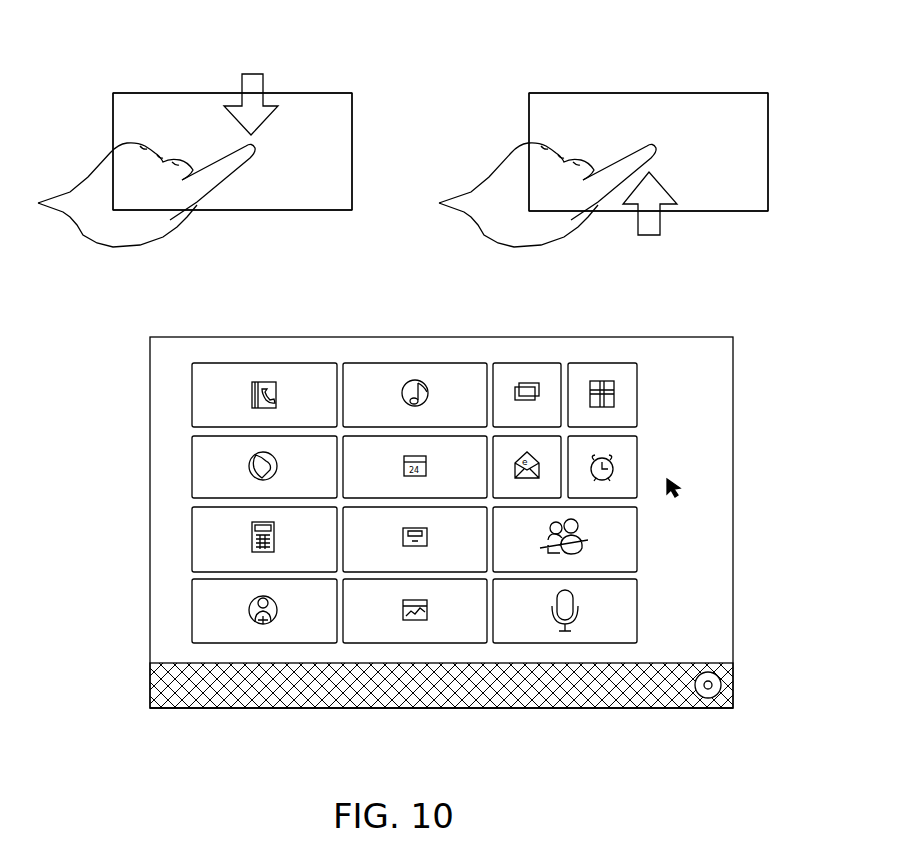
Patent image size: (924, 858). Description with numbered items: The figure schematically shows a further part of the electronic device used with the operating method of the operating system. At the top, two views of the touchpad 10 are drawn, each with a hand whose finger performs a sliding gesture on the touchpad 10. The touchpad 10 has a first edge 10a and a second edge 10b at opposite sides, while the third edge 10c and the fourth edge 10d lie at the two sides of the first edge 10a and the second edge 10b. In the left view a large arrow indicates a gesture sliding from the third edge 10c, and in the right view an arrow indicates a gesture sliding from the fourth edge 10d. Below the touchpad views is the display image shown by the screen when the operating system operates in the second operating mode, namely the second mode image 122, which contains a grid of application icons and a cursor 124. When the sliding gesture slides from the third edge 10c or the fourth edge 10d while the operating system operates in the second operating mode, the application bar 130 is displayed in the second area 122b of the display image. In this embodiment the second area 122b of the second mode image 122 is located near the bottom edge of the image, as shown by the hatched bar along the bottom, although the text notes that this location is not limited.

The touchpad 10 is at (128, 116).
The first edge 10a is at (360, 152).
The second edge 10b is at (104, 134).
The third edge 10c is at (231, 84).
The fourth edge 10d is at (236, 221).
The second mode image 122 is at (150, 527).
The second area 122b is at (287, 709).
The cursor 124 is at (682, 494).
The application bar 130 is at (448, 709).